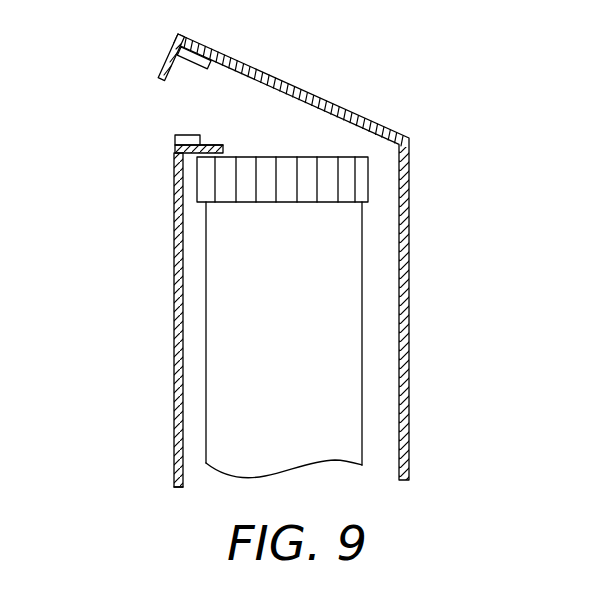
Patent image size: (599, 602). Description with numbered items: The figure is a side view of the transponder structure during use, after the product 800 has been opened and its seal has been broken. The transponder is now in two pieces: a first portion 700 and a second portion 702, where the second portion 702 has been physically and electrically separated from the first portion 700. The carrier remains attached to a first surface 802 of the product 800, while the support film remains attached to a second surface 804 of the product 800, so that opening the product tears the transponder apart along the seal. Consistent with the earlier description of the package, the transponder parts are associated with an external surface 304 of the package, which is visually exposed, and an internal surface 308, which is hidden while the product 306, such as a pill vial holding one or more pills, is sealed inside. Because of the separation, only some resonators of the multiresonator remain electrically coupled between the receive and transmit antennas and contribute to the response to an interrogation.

The external surface 304 is at (165, 301).
The product 306 is at (345, 273).
The internal surface 308 is at (194, 476).
The first portion 700 is at (188, 135).
The second portion 702 is at (202, 53).
The product 800 is at (409, 176).
The first surface 802 is at (216, 140).
The second surface 804 is at (246, 88).